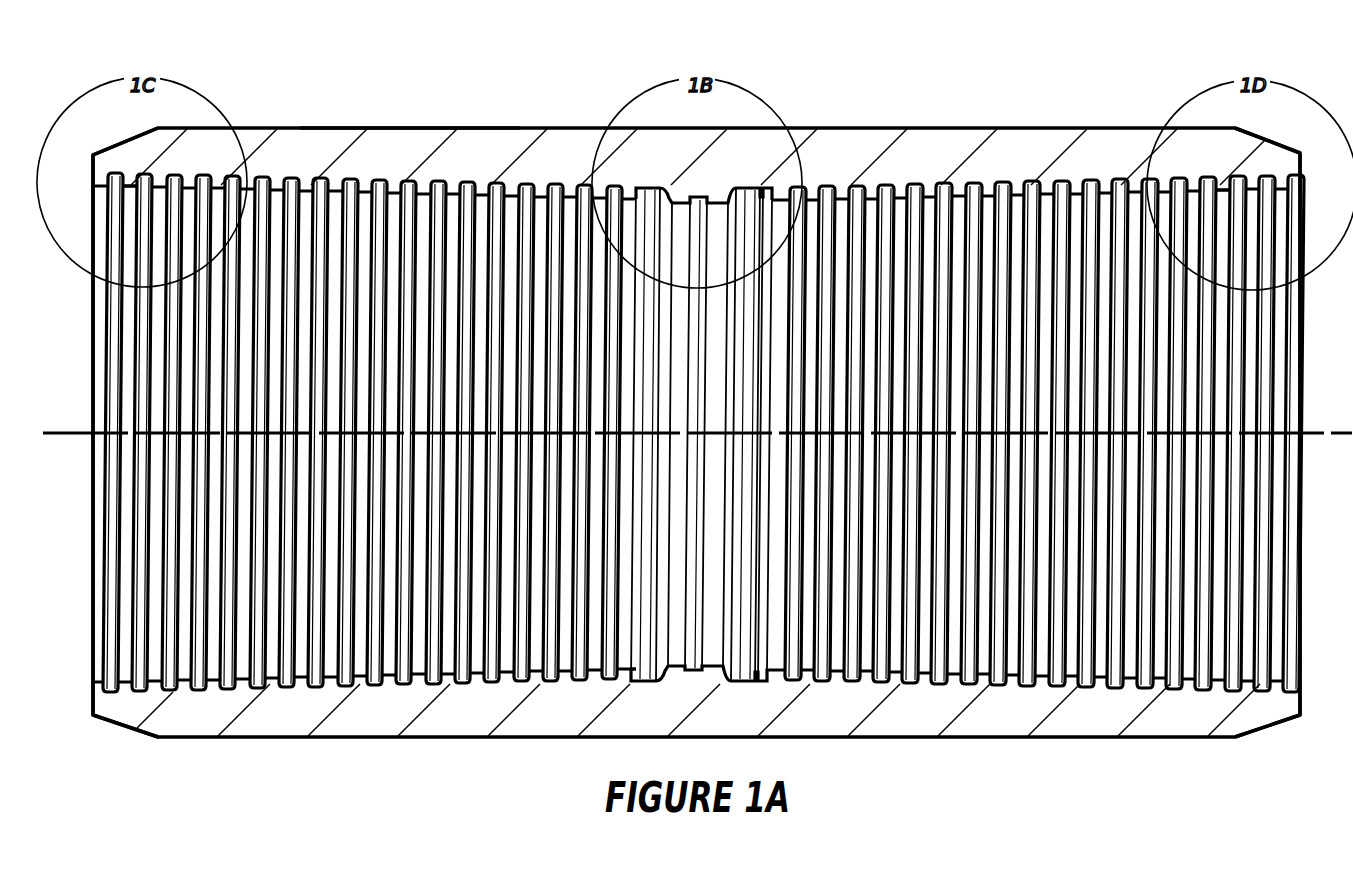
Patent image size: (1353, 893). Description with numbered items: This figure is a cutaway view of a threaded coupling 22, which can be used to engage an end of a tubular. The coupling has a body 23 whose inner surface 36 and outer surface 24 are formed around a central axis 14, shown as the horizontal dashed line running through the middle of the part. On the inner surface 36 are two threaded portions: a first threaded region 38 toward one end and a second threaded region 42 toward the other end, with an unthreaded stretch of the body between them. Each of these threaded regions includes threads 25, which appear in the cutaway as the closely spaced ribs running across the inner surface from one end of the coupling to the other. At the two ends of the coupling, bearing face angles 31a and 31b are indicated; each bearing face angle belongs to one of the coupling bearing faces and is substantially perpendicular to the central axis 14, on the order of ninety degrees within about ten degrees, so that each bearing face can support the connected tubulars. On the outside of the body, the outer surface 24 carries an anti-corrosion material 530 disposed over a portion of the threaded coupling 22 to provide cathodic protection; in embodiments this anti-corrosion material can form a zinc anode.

The threaded coupling 22 is at (1140, 56).
The outer surface 24 is at (405, 129).
The anti-corrosion material 530 is at (446, 129).
The body 23 is at (940, 140).
The inner surface 36 is at (158, 188).
The threads 25 is at (1222, 186).
The bearing face angle 31a is at (93, 385).
The bearing face angle 31b is at (1344, 431).
The central axis 14 is at (72, 438).
The first threaded region 38 is at (97, 477).
The second threaded region 42 is at (1296, 477).